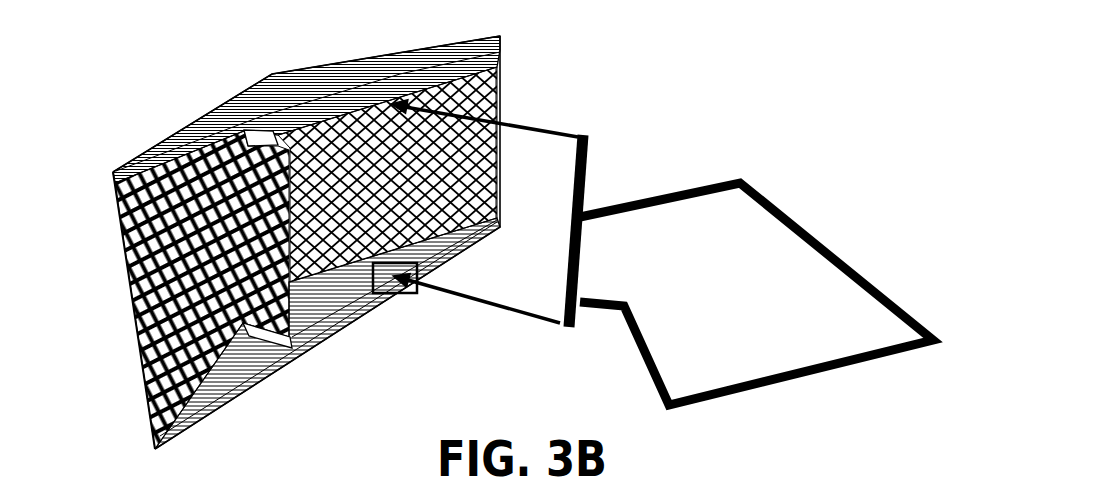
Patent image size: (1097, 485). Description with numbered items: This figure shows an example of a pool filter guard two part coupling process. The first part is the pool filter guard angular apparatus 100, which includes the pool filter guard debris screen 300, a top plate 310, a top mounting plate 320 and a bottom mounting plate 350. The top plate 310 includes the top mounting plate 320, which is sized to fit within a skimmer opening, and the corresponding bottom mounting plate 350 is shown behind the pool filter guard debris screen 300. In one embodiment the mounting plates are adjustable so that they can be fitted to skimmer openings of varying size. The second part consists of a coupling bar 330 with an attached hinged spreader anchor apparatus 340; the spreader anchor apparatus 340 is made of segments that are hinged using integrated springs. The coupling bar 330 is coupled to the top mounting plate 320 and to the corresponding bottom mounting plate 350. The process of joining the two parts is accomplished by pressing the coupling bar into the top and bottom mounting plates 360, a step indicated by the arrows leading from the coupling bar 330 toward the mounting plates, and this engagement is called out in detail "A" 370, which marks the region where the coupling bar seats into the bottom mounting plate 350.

The pool filter guard angular apparatus 100 is at (495, 229).
The pool filter guard debris screen 300 is at (478, 163).
The top plate 310 is at (250, 98).
The top mounting plate 320 is at (340, 102).
The coupling bar 330 is at (584, 178).
The spreader anchor apparatus 340 is at (770, 198).
The bottom mounting plate 350 is at (427, 252).
The pressing the coupling bar into the top and bottom mounting plates 360 is at (532, 124).
The detail "A" 370 is at (397, 294).